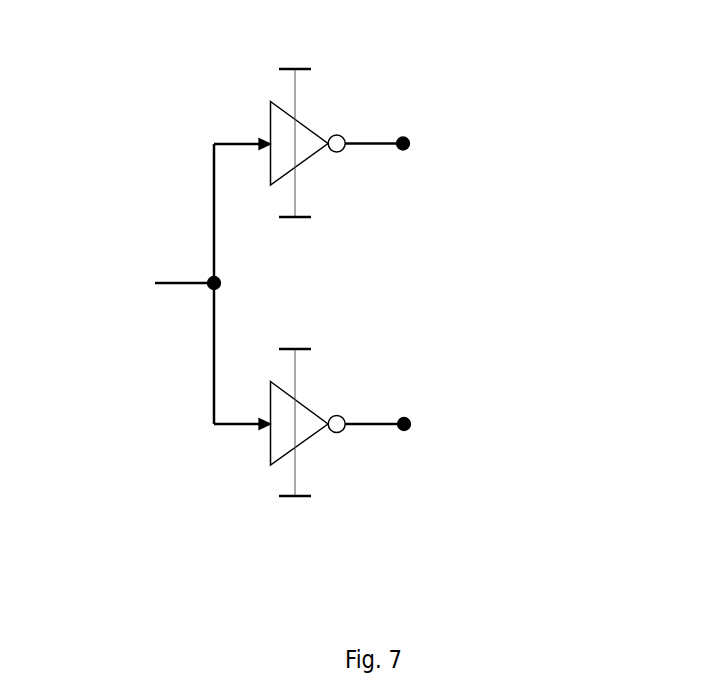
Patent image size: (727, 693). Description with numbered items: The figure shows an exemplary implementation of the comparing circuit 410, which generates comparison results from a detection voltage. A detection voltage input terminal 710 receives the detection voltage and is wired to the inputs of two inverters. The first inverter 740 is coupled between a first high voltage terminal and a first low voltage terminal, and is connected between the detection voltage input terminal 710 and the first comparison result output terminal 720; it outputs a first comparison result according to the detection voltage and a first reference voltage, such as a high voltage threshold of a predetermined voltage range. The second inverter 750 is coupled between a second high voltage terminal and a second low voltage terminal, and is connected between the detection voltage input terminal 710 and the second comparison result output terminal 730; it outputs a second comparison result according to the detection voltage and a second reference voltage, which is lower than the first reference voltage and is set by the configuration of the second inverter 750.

The comparing circuit 410 is at (72, 585).
The detection voltage input terminal 710 is at (212, 277).
The first comparison result output terminal 720 is at (404, 137).
The second comparison result output terminal 730 is at (405, 418).
The first inverter 740 is at (270, 110).
The second inverter 750 is at (270, 450).